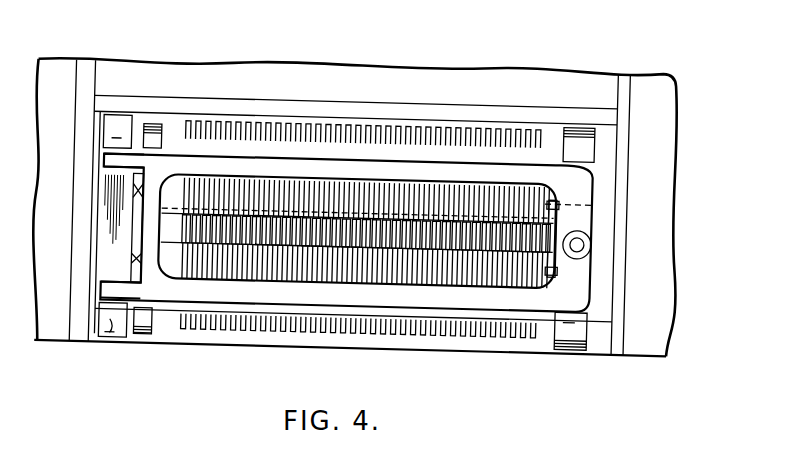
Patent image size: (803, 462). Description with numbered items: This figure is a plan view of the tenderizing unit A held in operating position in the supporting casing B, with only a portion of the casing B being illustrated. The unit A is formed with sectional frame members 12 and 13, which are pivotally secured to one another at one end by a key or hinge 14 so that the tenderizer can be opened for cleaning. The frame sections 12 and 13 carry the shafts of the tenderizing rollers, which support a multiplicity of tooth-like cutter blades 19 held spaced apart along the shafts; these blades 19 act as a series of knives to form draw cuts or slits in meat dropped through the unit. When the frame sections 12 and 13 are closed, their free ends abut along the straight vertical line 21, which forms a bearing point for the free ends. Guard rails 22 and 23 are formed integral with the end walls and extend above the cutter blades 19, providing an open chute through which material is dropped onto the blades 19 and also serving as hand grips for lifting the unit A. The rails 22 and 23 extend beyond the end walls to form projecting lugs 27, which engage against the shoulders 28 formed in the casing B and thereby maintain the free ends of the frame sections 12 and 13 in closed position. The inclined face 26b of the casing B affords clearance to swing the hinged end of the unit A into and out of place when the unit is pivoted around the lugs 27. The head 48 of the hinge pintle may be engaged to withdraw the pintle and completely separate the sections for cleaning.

The frame section 12 is at (540, 313).
The frame section 13 is at (476, 154).
The hinge 14 is at (589, 247).
The cutter blades 19 is at (336, 140).
The straight vertical line 21 is at (136, 230).
The guard rail 22 is at (250, 310).
The guard rail 23 is at (252, 153).
The inclined face 26b is at (609, 181).
The projecting lugs 27 is at (110, 291).
The shoulders 28 is at (118, 334).
The head 48 is at (584, 232).
The tenderizing unit A is at (544, 158).
The supporting casing B is at (656, 97).